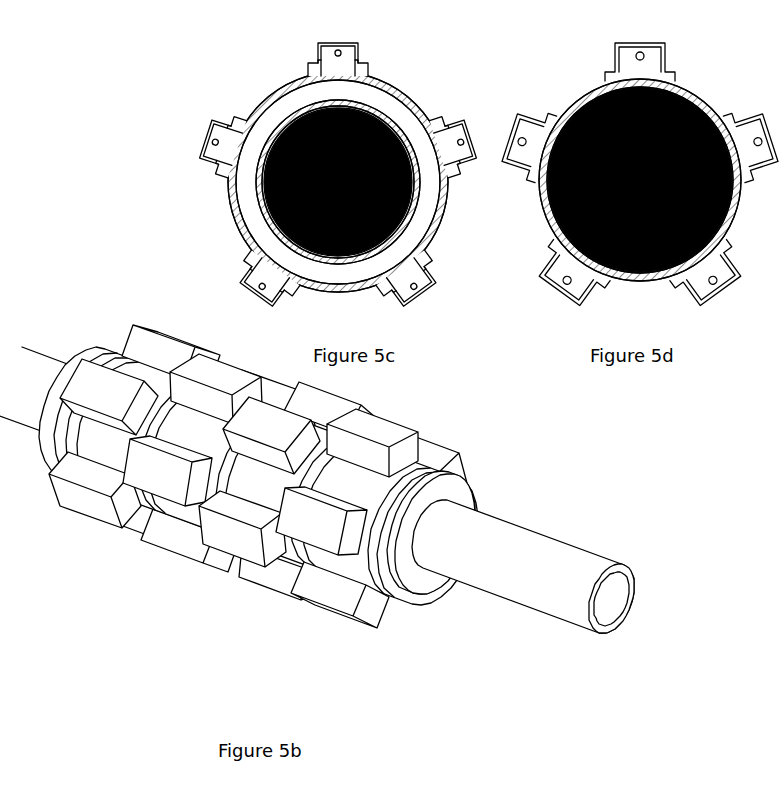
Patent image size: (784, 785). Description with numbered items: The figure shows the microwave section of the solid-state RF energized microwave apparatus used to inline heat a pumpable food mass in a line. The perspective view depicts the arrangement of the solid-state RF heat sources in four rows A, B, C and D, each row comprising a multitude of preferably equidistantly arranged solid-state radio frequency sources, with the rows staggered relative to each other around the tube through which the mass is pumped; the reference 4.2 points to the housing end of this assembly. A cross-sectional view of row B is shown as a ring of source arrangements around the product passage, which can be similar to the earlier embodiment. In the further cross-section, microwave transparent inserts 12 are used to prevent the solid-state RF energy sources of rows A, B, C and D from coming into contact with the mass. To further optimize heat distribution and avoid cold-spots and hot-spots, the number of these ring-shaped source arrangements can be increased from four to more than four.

In FIG. 5B, the housing shaft 4.2 is at (0, 397).
In FIG. 5D, the microwave transparent insert 12 is at (614, 155).
In FIG. 5B, the solid-state RF energy source A is at (92, 502).
In FIG. 5B, the solid-state RF energy source B is at (157, 480).
In FIG. 5B, the solid-state RF energy source C is at (242, 550).
In FIG. 5B, the solid-state RF energy source D is at (305, 527).